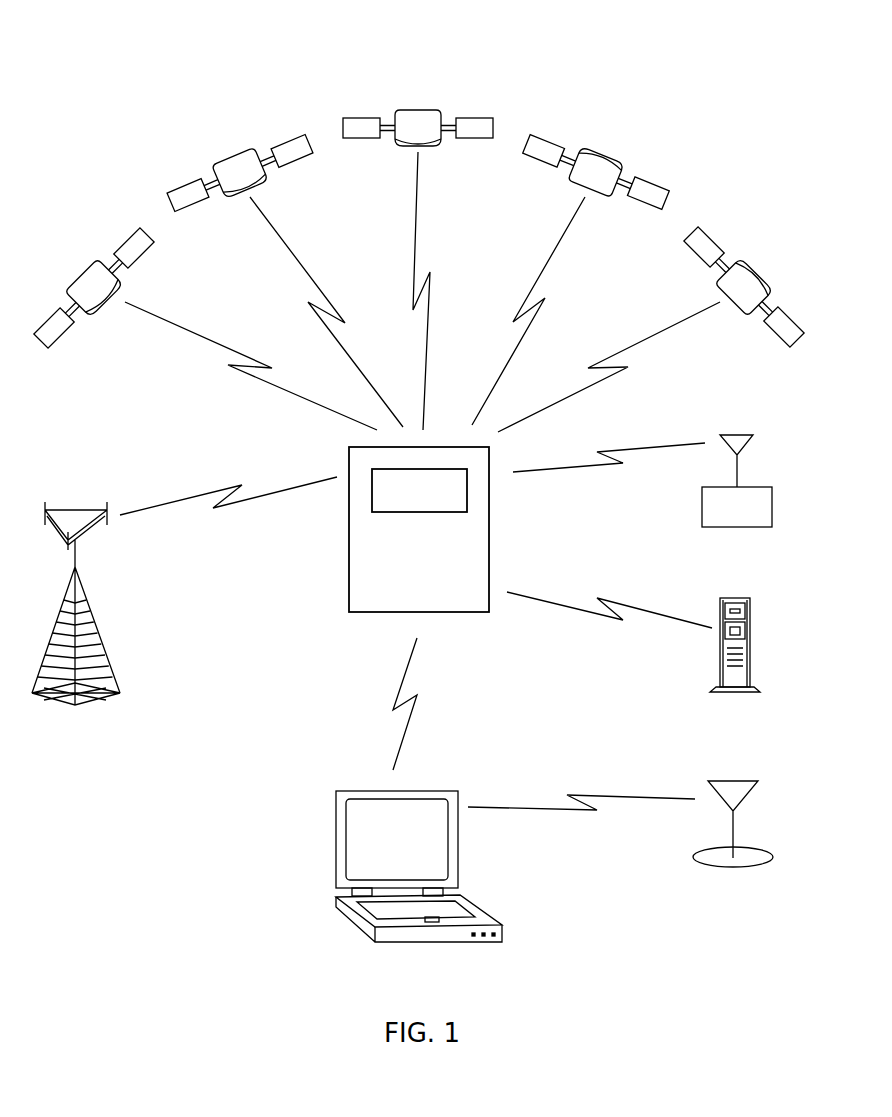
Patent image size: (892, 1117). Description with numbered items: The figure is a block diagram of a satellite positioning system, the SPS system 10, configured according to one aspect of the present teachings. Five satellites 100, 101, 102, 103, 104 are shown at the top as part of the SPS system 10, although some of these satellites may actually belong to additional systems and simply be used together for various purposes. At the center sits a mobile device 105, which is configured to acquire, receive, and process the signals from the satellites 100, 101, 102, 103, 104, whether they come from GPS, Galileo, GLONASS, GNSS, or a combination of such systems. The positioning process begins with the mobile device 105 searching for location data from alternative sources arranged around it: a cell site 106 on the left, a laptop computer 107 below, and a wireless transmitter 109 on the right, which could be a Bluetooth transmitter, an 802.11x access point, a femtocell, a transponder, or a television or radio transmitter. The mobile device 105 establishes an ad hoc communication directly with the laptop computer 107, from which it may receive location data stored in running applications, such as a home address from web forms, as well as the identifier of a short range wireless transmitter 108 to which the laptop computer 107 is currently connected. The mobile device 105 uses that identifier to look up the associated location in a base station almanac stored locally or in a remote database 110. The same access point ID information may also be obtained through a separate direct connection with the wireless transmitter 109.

The SPS system 10 is at (119, 67).
The satellite 100 is at (85, 270).
The satellite 101 is at (233, 152).
The satellite 102 is at (420, 110).
The satellite 103 is at (605, 153).
The satellite 104 is at (760, 267).
The mobile device 105 is at (368, 612).
The cell site 106 is at (97, 620).
The laptop computer 107 is at (362, 932).
The short range wireless transmitter 108 is at (750, 847).
The wireless transmitter 109 is at (752, 487).
The remote database 110 is at (735, 598).